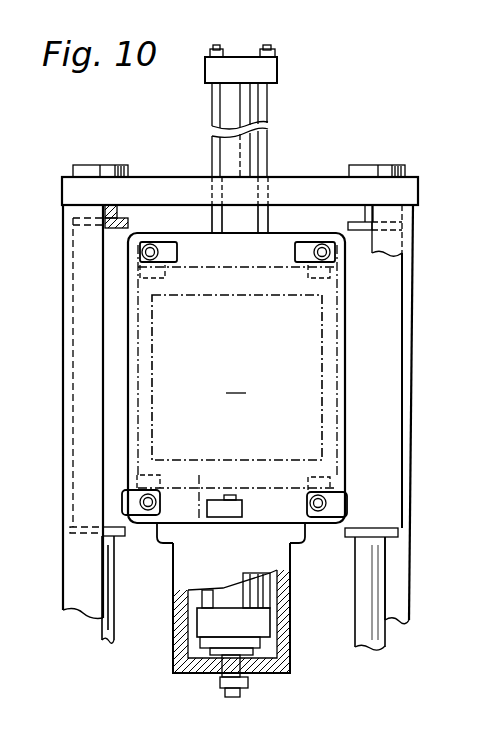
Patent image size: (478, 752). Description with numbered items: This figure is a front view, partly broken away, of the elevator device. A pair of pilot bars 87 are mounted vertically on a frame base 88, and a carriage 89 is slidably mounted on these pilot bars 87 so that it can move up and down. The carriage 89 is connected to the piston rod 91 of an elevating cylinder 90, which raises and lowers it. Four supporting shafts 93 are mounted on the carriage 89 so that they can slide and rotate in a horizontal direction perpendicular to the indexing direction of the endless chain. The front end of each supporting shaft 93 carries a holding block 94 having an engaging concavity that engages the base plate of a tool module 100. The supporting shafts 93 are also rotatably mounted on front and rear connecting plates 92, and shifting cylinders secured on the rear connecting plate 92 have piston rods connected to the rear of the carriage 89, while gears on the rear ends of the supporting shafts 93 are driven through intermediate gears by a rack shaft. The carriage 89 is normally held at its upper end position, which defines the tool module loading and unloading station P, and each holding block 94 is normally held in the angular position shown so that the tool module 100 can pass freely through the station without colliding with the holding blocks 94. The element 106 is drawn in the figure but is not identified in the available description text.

The pilot bar 87 is at (88, 623).
The frame base 88 is at (331, 187).
The carriage 89 is at (387, 353).
The elevating cylinder 90 is at (258, 148).
The piston rod 91 is at (213, 680).
The connecting plate 92 is at (232, 243).
The supporting shaft 93 is at (150, 245).
The holding block 94 is at (178, 254).
The tool module 100 is at (310, 398).
The block 106 is at (201, 522).